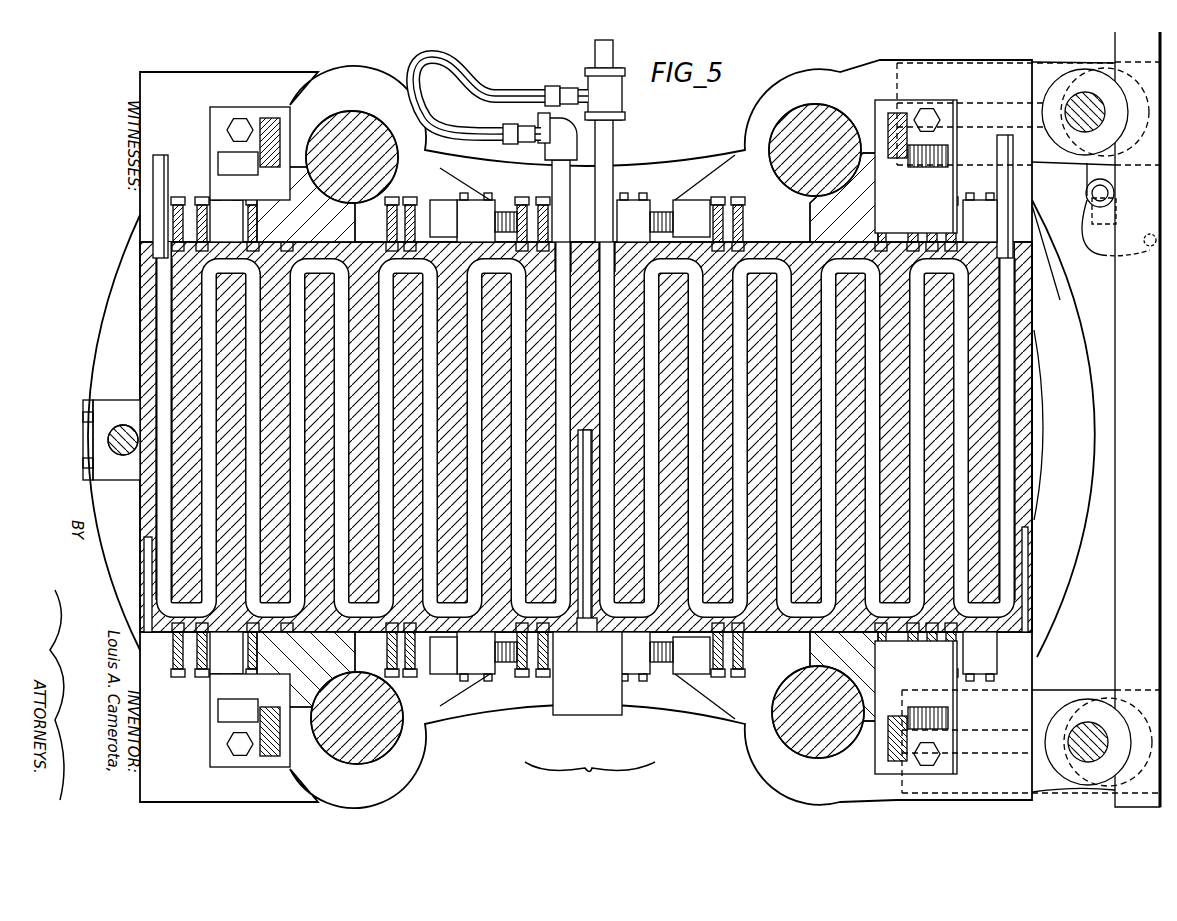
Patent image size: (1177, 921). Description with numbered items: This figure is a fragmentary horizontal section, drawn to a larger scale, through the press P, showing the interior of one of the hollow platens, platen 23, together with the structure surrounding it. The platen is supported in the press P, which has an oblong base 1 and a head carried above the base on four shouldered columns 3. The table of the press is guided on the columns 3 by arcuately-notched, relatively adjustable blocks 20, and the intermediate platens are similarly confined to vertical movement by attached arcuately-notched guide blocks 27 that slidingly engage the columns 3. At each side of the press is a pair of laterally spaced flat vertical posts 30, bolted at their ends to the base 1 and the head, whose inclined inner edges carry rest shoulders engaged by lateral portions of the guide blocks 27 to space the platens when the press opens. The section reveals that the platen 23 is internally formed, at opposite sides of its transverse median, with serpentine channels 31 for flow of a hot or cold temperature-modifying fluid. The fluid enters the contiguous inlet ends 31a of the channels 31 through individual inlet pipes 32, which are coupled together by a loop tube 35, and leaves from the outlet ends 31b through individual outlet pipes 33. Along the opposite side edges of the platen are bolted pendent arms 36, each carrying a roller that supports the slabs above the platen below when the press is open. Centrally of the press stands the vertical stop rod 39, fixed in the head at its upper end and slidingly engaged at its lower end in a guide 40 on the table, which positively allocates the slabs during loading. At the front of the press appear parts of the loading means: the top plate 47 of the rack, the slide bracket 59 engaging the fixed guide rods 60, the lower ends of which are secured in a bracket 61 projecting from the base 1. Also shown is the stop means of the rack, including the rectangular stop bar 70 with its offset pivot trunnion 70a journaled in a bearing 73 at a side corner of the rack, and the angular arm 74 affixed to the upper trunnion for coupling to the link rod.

The base 1 is at (92, 370).
The columns 3 is at (352, 128).
The blocks 20 is at (445, 172).
The platen 23 is at (146, 531).
The guide blocks 27 is at (340, 216).
The posts 30 is at (270, 118).
The serpentine channels 31 is at (208, 354).
The inlet ends 31a is at (566, 262).
The outlet ends 31b is at (166, 303).
The inlet pipes 32 is at (566, 172).
The outlet pipes 33 is at (160, 162).
The loop tube 35 is at (505, 90).
The pendent arms 36 is at (226, 208).
The stop rod 39 is at (110, 440).
The guide 40 is at (114, 402).
The top plate 47 is at (1128, 296).
The slide bracket 59 is at (1104, 70).
The guide rods 60 is at (1084, 102).
The bracket 61 is at (1048, 62).
The stop bar 70 is at (1086, 208).
The pivot trunnion 70a is at (1098, 193).
The bearing 73 is at (1112, 180).
The angular arm 74 is at (1100, 242).
The press P is at (590, 718).